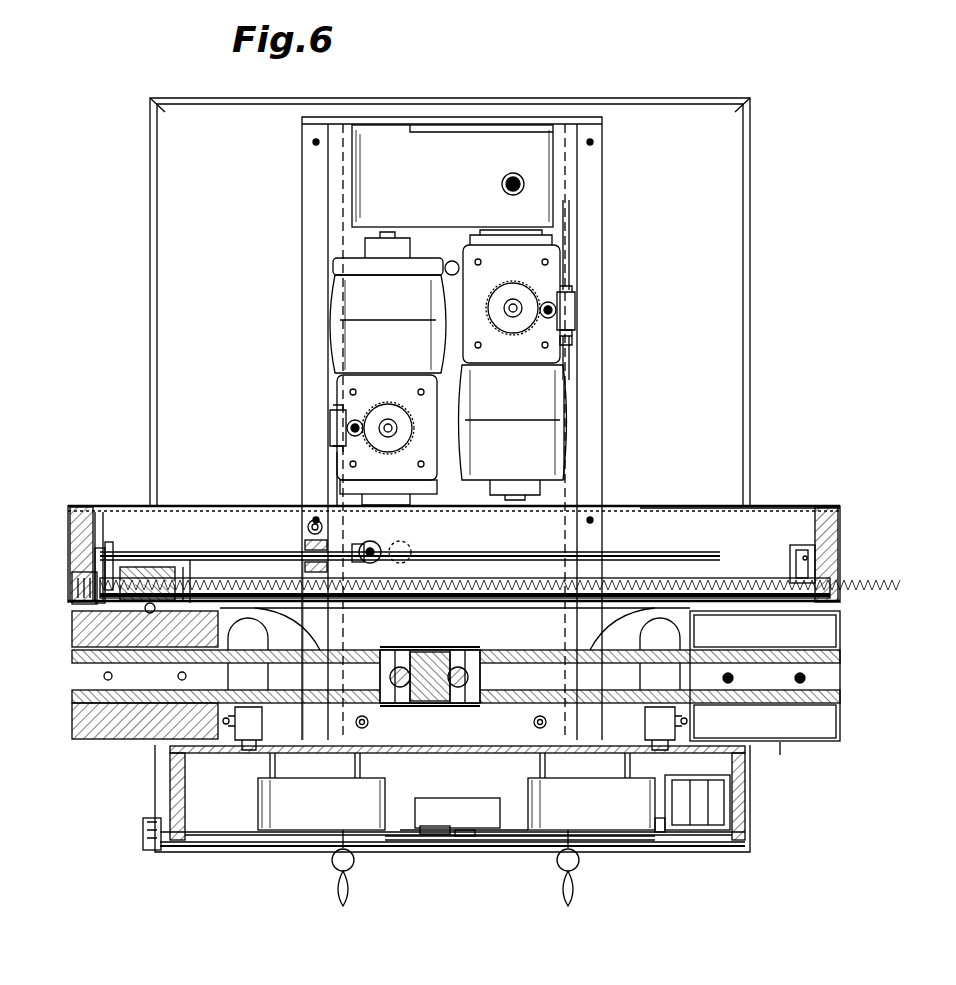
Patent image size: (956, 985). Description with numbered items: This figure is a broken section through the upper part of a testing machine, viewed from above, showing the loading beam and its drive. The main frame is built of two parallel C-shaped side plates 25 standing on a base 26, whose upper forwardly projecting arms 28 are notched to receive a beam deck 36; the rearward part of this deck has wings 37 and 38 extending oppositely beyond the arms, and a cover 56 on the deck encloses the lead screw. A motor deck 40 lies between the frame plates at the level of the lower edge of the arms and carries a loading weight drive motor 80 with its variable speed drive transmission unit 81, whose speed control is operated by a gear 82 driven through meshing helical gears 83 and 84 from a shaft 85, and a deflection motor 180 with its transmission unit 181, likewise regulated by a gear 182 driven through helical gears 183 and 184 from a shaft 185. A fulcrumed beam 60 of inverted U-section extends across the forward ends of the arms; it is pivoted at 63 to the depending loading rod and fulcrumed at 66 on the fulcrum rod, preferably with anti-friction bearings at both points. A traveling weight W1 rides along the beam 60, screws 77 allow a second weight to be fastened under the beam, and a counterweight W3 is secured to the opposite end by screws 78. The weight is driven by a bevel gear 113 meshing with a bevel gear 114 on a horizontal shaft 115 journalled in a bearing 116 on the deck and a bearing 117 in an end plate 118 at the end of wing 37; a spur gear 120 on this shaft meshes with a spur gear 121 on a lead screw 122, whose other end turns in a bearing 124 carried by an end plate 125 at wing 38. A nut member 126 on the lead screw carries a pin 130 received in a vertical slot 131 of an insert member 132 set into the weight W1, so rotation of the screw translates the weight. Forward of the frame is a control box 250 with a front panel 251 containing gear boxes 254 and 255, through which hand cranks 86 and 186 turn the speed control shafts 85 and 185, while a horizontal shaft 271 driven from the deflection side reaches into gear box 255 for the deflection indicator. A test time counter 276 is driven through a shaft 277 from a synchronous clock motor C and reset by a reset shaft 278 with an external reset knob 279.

The C-shaped side plates 25 is at (302, 158).
The base 26 is at (745, 323).
The upper forwardly projecting arms 28 is at (310, 445).
The beam deck 36 is at (300, 721).
The deck wing 37 is at (118, 508).
The deck wing 38 is at (752, 515).
The motor deck 40 is at (335, 248).
The cover 56 is at (635, 505).
The fulcrumed beam 60 is at (742, 705).
The pivotal connection 63 is at (480, 677).
The fulcrum 66 is at (428, 652).
The screws 77 is at (125, 725).
The screws 78 is at (798, 676).
The loading weight drive motor 80 is at (345, 302).
The variable speed drive transmission unit 81 is at (340, 388).
The gear 82 is at (392, 455).
The helical gear 83 is at (340, 415).
The helical gear 84 is at (346, 428).
The shaft 85 is at (340, 478).
The hand crank 86 is at (350, 870).
The bevel gear 113 is at (402, 541).
The bevel gear 114 is at (372, 541).
The horizontal shaft 115 is at (195, 578).
The bearing 116 is at (305, 540).
The bearing 117 is at (80, 525).
The end plate 118 is at (100, 520).
The spur gear 120 is at (102, 548).
The spur gear 121 is at (118, 556).
The lead screw 122 is at (190, 560).
The bearing 124 is at (800, 548).
The end plate 125 is at (826, 507).
The nut member 126 is at (160, 568).
The pin 130 is at (160, 615).
The vertical slot 131 is at (150, 615).
The insert member 132 is at (165, 615).
The deflection motor 180 is at (555, 412).
The variable speed drive transmission unit 181 is at (555, 290).
The gear 182 is at (572, 340).
The helical gear 183 is at (575, 297).
The helical gear 184 is at (560, 314).
The shaft 185 is at (566, 372).
The hand crank 186 is at (577, 870).
The control box 250 is at (750, 825).
The front panel 251 is at (525, 845).
The gear box 254 is at (258, 790).
The gear box 255 is at (528, 785).
The horizontal shaft 271 is at (570, 237).
The test time counter 276 is at (450, 838).
The shaft 277 is at (660, 835).
The reset shaft 278 is at (248, 845).
The reset knob 279 is at (143, 835).
The synchronous clock motor C is at (690, 828).
The traveling weight W1 is at (110, 728).
The counterweight W3 is at (785, 742).